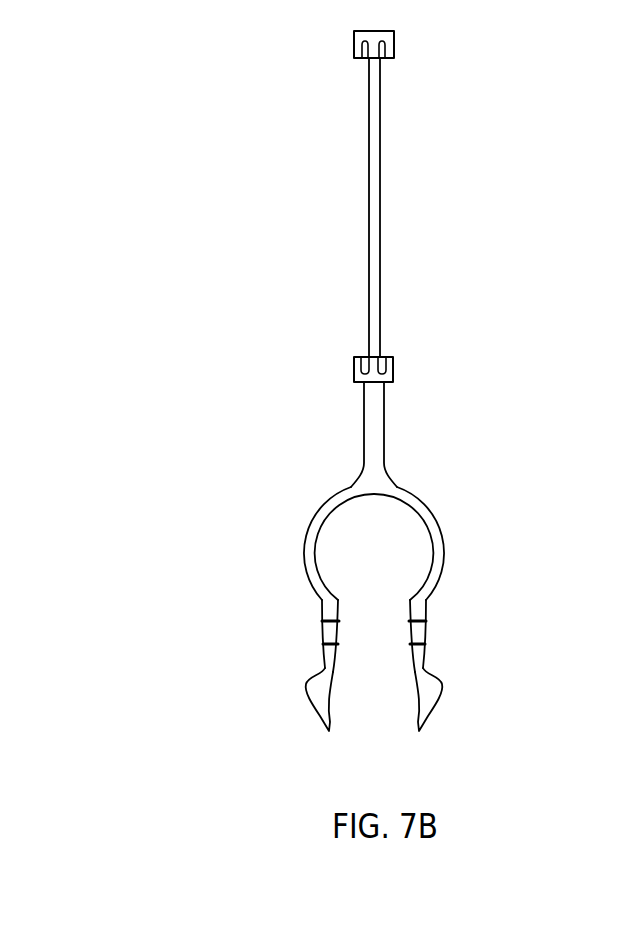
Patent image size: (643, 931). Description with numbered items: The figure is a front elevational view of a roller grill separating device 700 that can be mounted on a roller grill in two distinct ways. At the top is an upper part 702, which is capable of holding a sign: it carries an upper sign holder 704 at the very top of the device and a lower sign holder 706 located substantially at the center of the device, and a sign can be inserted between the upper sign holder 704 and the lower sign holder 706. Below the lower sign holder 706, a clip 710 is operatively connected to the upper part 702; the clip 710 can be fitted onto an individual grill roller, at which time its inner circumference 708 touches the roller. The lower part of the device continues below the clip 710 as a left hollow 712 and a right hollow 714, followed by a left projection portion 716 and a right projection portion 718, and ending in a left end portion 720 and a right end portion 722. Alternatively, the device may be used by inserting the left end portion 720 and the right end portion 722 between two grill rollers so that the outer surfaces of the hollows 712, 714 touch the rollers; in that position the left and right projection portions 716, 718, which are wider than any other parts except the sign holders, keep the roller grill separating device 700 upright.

The roller grill separating device 700 is at (325, 209).
The upper part 702 is at (375, 200).
The upper sign holder 704 is at (375, 40).
The lower sign holder 706 is at (390, 363).
The inner circumference 708 is at (338, 498).
The clip 710 is at (303, 552).
The left hollow 712 is at (315, 595).
The right hollow 714 is at (422, 599).
The left projection portion 716 is at (328, 630).
The right projection portion 718 is at (408, 631).
The left end portion 720 is at (317, 698).
The right end portion 722 is at (424, 705).